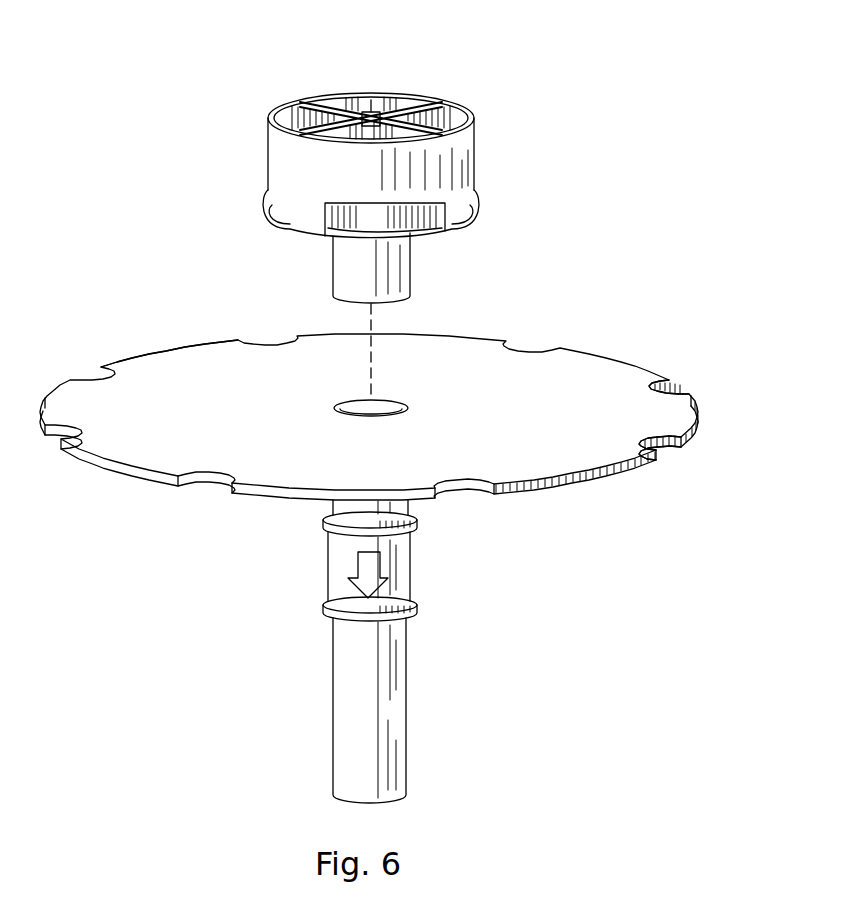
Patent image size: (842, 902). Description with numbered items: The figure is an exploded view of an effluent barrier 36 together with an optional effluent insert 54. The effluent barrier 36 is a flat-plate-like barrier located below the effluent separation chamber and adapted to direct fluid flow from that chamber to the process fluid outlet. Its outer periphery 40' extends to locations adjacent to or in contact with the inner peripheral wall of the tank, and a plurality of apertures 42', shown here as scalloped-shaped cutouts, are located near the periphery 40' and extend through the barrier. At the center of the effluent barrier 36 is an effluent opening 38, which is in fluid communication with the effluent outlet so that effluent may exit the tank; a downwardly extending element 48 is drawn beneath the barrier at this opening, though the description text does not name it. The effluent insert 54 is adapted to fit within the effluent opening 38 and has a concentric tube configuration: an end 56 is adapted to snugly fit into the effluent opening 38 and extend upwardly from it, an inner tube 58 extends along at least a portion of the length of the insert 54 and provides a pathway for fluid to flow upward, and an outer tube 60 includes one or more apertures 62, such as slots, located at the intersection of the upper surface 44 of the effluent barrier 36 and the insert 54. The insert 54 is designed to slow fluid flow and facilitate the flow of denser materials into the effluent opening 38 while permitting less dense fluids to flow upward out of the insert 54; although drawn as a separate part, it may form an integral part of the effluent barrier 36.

The effluent barrier 36 is at (610, 352).
The effluent opening 38 is at (378, 406).
The outer periphery 40' is at (706, 443).
The apertures 42' is at (711, 376).
The upper surface 44 is at (175, 378).
The shaft 48 is at (412, 566).
The effluent insert 54 is at (450, 166).
The end 56 is at (345, 278).
The inner tube 58 is at (371, 112).
The outer tube 60 is at (268, 162).
The apertures 62 is at (266, 220).